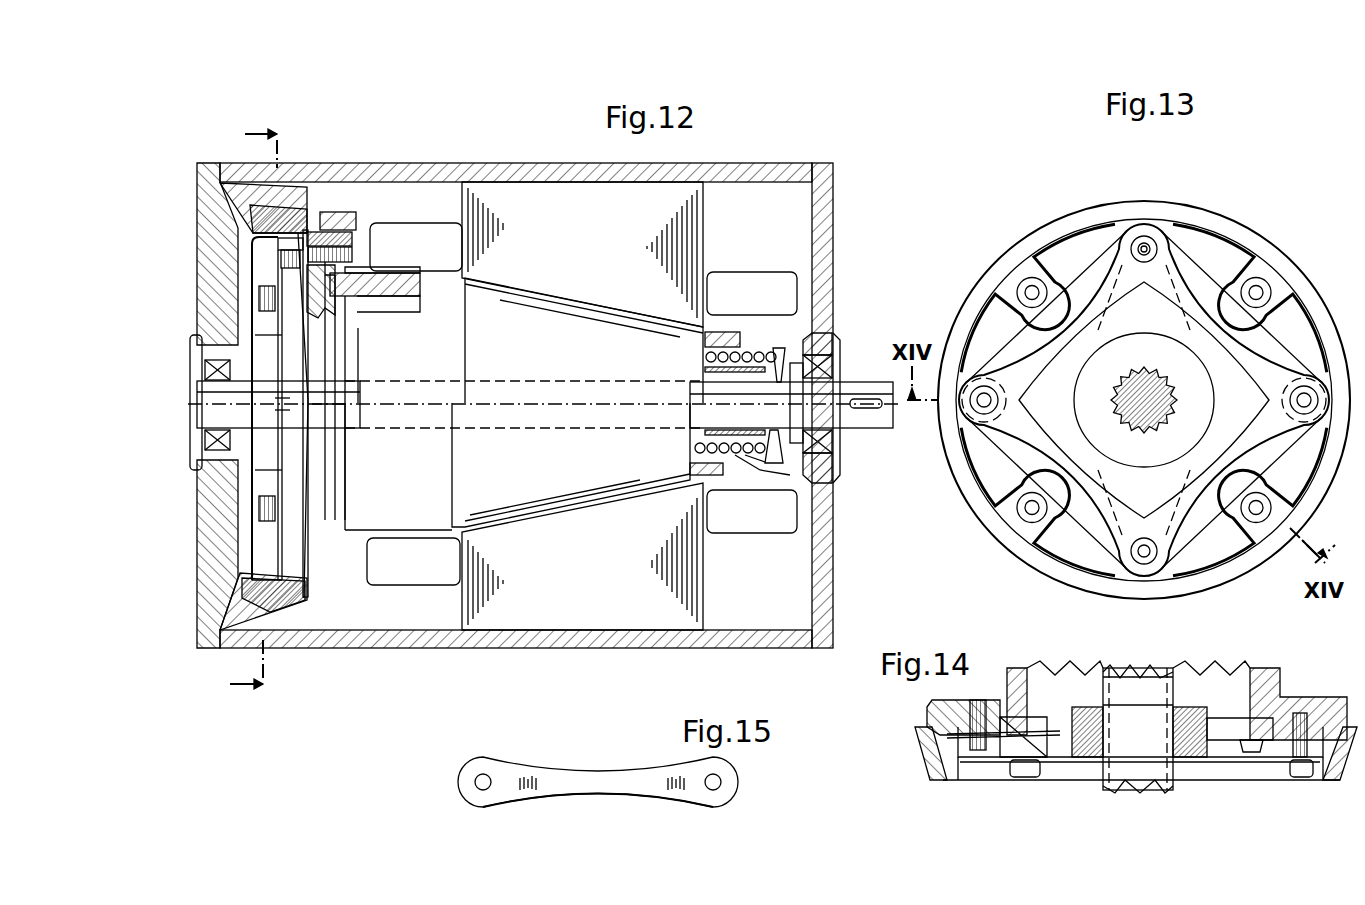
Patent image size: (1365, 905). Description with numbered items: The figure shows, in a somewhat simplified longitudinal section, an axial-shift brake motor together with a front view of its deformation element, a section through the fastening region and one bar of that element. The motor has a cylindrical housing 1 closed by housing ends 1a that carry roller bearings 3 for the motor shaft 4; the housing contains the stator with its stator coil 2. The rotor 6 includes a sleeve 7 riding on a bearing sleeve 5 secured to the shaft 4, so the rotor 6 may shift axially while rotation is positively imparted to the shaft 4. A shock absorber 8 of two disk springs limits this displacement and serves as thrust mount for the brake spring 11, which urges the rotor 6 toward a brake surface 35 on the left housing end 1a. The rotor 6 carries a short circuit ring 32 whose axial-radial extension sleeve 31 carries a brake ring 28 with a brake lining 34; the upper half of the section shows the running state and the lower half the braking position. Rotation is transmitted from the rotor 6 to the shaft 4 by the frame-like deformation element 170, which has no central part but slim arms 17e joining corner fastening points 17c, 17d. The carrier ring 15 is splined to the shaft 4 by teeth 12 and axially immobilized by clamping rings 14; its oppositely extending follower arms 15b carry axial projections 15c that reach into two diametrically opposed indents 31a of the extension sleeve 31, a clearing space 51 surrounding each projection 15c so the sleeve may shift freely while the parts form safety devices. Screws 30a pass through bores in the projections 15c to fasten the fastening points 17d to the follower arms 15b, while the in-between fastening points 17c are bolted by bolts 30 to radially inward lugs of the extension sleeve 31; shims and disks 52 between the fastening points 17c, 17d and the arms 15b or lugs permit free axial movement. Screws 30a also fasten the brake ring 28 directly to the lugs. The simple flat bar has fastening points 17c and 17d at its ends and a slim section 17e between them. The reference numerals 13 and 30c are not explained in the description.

In FIG. 12, the housing 1 is at (653, 640).
In FIG. 12, the housing end 1a is at (207, 498).
In FIG. 12, the stator coil 2 is at (405, 577).
In FIG. 12, the roller bearings 3 is at (228, 443).
In FIG. 12, the motor shaft 4 is at (512, 415).
In FIG. 12, the bearing sleeve 5 is at (737, 452).
In FIG. 12, the rotor 6 is at (590, 600).
In FIG. 12, the sleeve 7 is at (787, 457).
In FIG. 12, the shock absorber 8 is at (803, 450).
In FIG. 12, the brake spring 11 is at (745, 353).
In FIG. 13, the teeth 12 is at (1165, 435).
In FIG. 12, the shaft axis 13 is at (275, 405).
In FIG. 12, the clamping rings 14 is at (270, 375).
In FIG. 14, the clamping rings 14 is at (1100, 668).
In FIG. 12, the carrier ring 15 is at (300, 358).
In FIG. 13, the carrier ring 15 is at (1199, 387).
In FIG. 14, the carrier ring 15 is at (1192, 725).
In FIG. 12, the follower arms 15b is at (317, 285).
In FIG. 13, the follower arms 15b is at (1126, 332).
In FIG. 12, the projections 15c is at (362, 232).
In FIG. 13, the fastening points 17c is at (972, 415).
In FIG. 15, the fastening points 17c is at (475, 782).
In FIG. 13, the fastening points 17d is at (1129, 235).
In FIG. 15, the fastening points 17d is at (721, 782).
In FIG. 13, the arms 17e is at (1208, 305).
In FIG. 15, the arms 17e is at (595, 775).
In FIG. 12, the brake ring 28 is at (318, 598).
In FIG. 14, the brake ring 28 is at (925, 717).
In FIG. 12, the bolts 30 is at (237, 452).
In FIG. 13, the bolts 30 is at (977, 423).
In FIG. 14, the bolts 30 is at (980, 735).
In FIG. 12, the screws 30a is at (290, 243).
In FIG. 13, the screws 30a is at (1154, 246).
In FIG. 14, the screws 30a is at (1243, 745).
In FIG. 12, the fastening bolt 30c is at (259, 512).
In FIG. 14, the fastening bolt 30c is at (1023, 770).
In FIG. 12, the extension sleeve 31 is at (343, 215).
In FIG. 13, the extension sleeve 31 is at (985, 509).
In FIG. 14, the extension sleeve 31 is at (1280, 688).
In FIG. 12, the indents 31a is at (374, 234).
In FIG. 12, the short circuit ring 32 is at (400, 290).
In FIG. 12, the brake lining 34 is at (263, 600).
In FIG. 12, the brake surface 35 is at (240, 597).
In FIG. 12, the clearing space 51 is at (333, 212).
In FIG. 12, the shims and disks 52 is at (290, 236).
In FIG. 14, the shims and disks 52 is at (978, 700).
In FIG. 12, the deformation element 170 is at (313, 317).
In FIG. 13, the deformation element 170 is at (1068, 538).
In FIG. 14, the deformation element 170 is at (1062, 742).